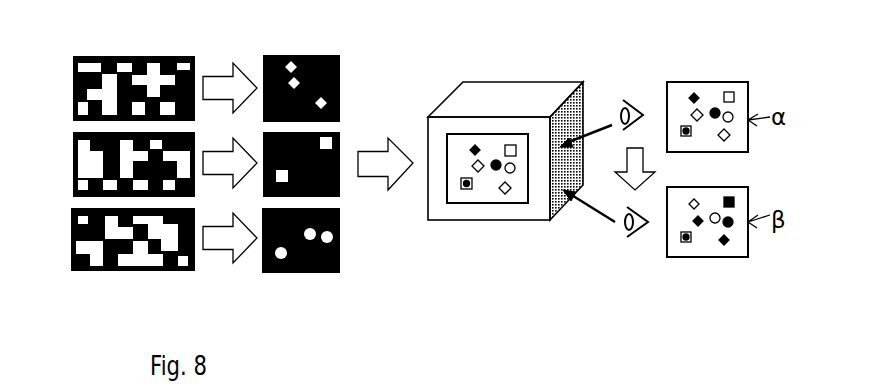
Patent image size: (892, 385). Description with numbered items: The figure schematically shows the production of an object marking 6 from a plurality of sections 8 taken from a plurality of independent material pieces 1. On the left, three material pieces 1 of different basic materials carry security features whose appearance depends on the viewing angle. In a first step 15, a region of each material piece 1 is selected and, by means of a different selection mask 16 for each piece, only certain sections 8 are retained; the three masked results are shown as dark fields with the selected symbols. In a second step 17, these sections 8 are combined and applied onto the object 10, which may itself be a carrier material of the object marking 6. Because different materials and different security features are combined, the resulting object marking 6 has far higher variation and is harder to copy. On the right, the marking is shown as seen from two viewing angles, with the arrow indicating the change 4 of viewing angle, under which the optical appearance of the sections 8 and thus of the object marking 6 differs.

The material piece 1 is at (82, 158).
The first step 15 is at (242, 250).
The selection mask 16 is at (305, 275).
The second step 17 is at (385, 170).
The object 10 is at (442, 215).
The object marking 6 is at (624, 142).
The section 8 is at (512, 147).
The change of the viewing angle 4 is at (635, 168).